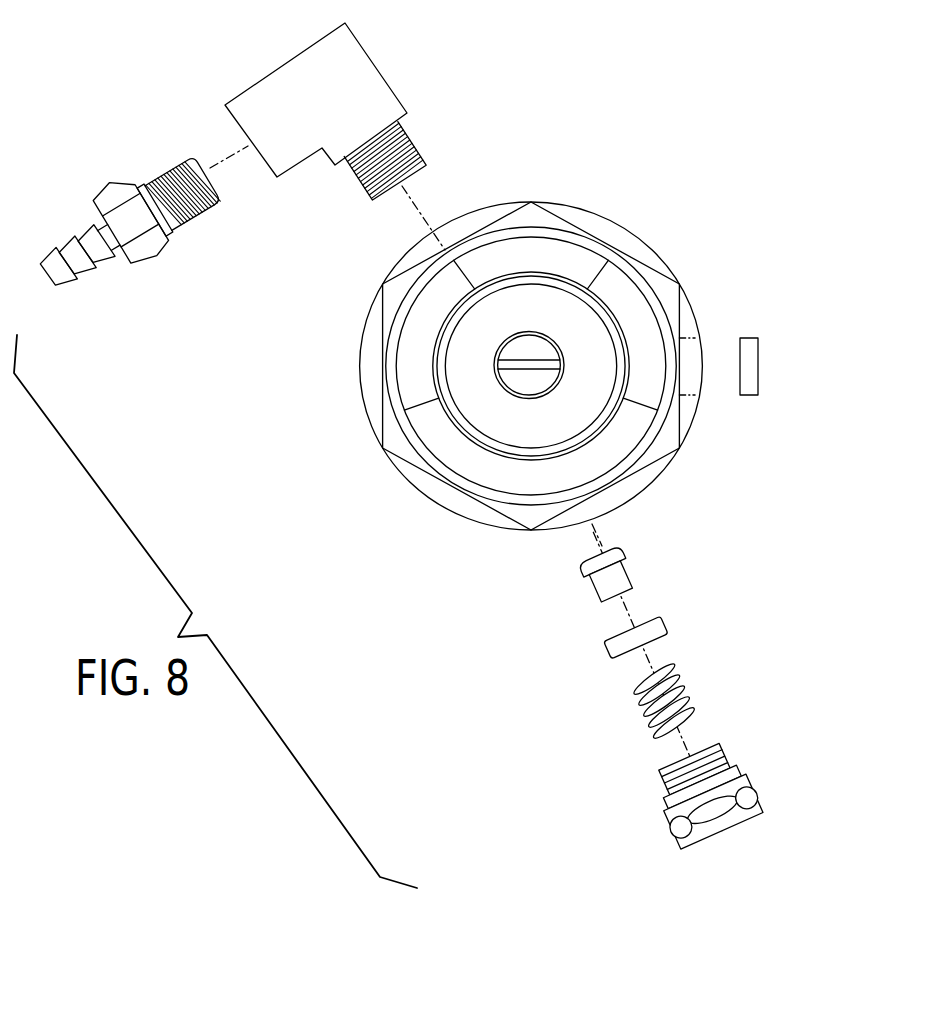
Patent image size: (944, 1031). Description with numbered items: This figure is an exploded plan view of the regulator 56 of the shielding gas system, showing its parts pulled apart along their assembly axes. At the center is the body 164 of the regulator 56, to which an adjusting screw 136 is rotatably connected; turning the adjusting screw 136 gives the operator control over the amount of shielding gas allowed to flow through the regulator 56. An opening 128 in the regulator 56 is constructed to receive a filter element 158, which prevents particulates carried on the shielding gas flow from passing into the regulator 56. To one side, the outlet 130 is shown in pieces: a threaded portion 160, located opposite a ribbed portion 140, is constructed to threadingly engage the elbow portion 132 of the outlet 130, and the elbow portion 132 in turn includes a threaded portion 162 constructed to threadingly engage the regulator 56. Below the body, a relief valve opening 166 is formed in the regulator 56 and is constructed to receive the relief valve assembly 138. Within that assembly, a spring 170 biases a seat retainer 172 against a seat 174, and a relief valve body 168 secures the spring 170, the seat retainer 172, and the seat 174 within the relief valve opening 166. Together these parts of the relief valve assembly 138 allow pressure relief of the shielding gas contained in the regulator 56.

The regulator 56 is at (531, 172).
The opening 128 is at (712, 384).
The outlet 130 is at (250, 52).
The elbow portion 132 is at (339, 104).
The adjusting screw 136 is at (515, 378).
The relief valve assembly 138 is at (582, 744).
The ribbed portion 140 is at (56, 247).
The filter element 158 is at (758, 375).
The threaded portion 160 is at (155, 165).
The threaded portion 162 is at (415, 143).
The body 164 is at (551, 266).
The relief valve opening 166 is at (604, 517).
The relief valve body 168 is at (667, 805).
The spring 170 is at (678, 682).
The seat retainer 172 is at (665, 622).
The seat 174 is at (632, 572).